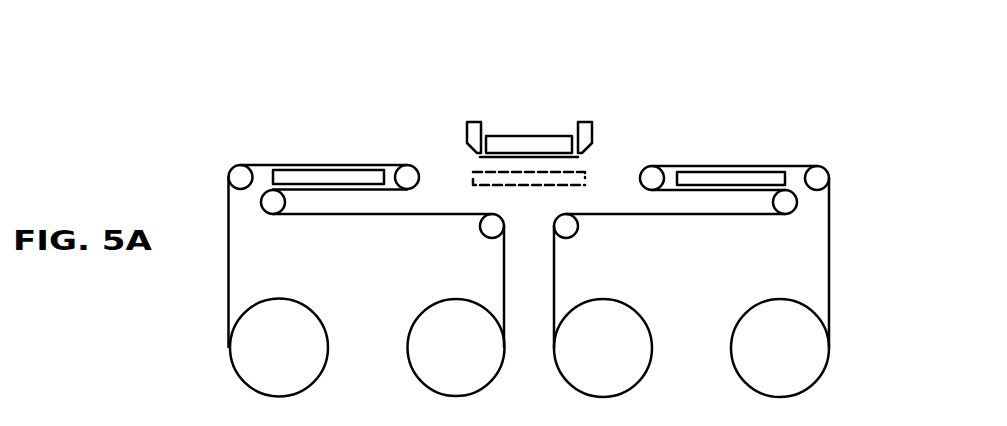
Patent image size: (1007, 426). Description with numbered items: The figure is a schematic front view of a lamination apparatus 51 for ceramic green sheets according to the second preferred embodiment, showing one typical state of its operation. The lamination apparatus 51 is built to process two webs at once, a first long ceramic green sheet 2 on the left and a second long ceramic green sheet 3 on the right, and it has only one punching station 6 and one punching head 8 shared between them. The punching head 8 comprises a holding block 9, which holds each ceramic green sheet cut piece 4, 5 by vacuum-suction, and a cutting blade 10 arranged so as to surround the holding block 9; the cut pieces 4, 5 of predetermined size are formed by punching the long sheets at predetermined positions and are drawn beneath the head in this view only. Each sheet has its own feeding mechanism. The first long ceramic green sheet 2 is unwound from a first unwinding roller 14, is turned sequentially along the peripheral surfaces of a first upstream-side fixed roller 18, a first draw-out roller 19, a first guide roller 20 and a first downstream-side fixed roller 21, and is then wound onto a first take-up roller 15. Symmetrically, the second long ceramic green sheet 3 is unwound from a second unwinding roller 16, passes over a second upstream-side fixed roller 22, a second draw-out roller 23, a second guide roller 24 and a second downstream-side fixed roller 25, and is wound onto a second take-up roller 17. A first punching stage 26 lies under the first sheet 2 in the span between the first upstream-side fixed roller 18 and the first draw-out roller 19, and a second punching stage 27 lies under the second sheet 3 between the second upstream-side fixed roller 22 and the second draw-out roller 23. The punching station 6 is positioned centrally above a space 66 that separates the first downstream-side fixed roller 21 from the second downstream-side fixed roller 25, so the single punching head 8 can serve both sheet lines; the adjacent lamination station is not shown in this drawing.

The lamination apparatus 51 is at (282, 36).
The first long ceramic green sheet 2 is at (333, 165).
The second long ceramic green sheet 3 is at (732, 166).
The ceramic green sheet cut piece 4 is at (553, 158).
The ceramic green sheet cut piece 5 is at (553, 158).
The punching station 6 is at (528, 196).
The punching head 8 is at (513, 129).
The holding block 9 is at (553, 140).
The cutting blade 10 is at (477, 122).
The first unwinding roller 14 is at (305, 373).
The first take-up roller 15 is at (430, 313).
The second unwinding roller 16 is at (748, 318).
The second take-up roller 17 is at (630, 383).
The first upstream-side fixed roller 18 is at (240, 175).
The first draw-out roller 19 is at (410, 176).
The first guide roller 20 is at (273, 204).
The first downstream-side fixed roller 21 is at (490, 232).
The second upstream-side fixed roller 22 is at (823, 173).
The second draw-out roller 23 is at (655, 173).
The second guide roller 24 is at (783, 207).
The second downstream-side fixed roller 25 is at (570, 232).
The first punching stage 26 is at (295, 175).
The second punching stage 27 is at (767, 175).
The space 66 is at (530, 305).